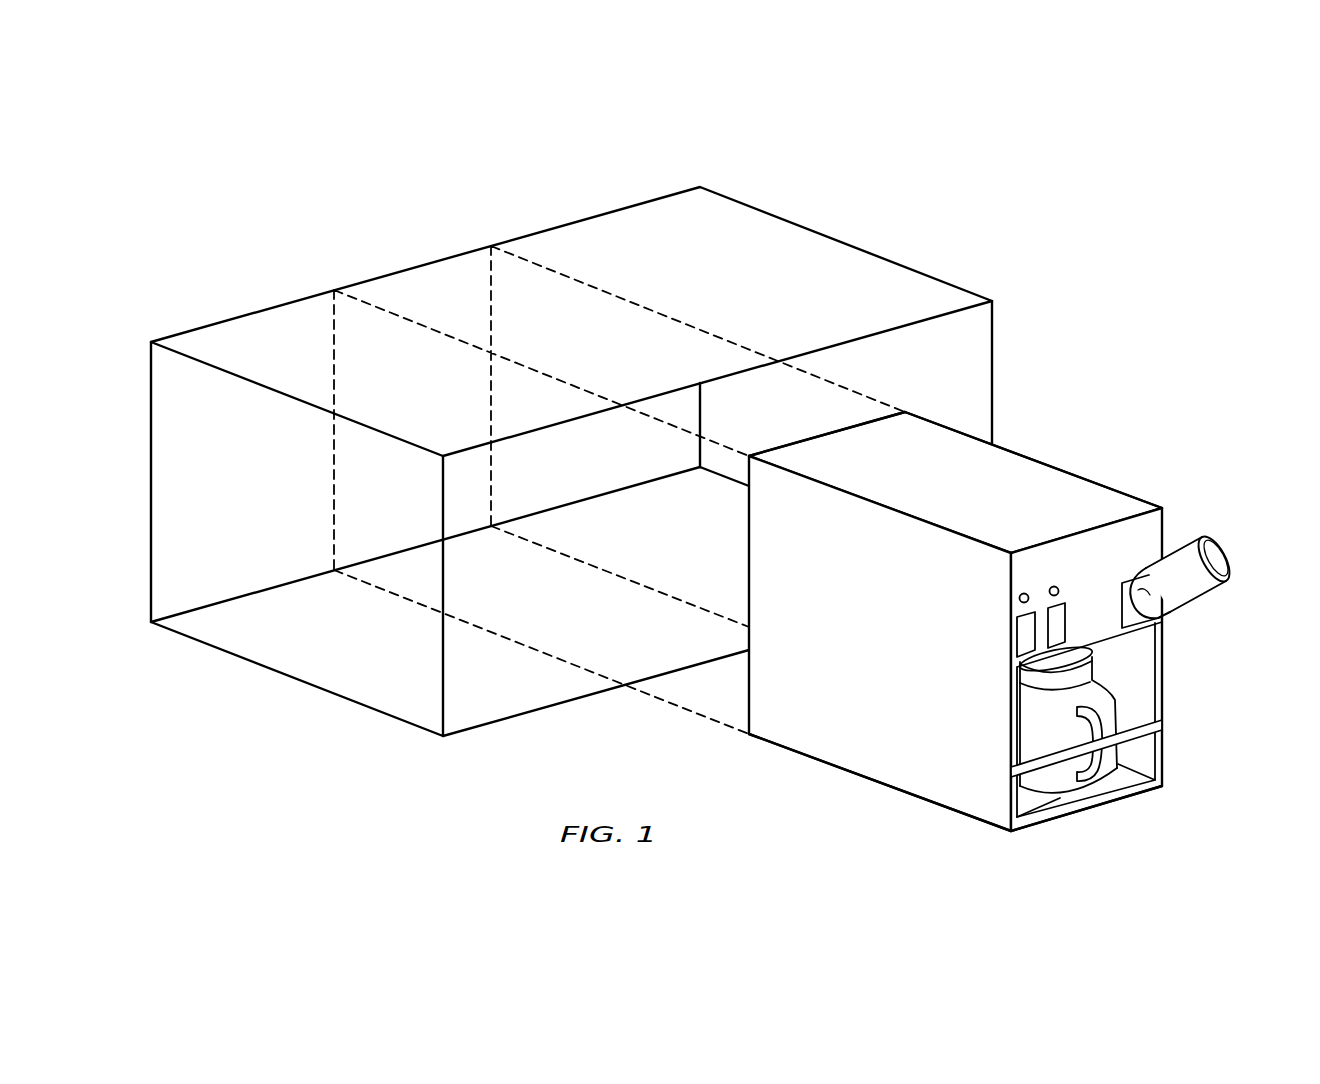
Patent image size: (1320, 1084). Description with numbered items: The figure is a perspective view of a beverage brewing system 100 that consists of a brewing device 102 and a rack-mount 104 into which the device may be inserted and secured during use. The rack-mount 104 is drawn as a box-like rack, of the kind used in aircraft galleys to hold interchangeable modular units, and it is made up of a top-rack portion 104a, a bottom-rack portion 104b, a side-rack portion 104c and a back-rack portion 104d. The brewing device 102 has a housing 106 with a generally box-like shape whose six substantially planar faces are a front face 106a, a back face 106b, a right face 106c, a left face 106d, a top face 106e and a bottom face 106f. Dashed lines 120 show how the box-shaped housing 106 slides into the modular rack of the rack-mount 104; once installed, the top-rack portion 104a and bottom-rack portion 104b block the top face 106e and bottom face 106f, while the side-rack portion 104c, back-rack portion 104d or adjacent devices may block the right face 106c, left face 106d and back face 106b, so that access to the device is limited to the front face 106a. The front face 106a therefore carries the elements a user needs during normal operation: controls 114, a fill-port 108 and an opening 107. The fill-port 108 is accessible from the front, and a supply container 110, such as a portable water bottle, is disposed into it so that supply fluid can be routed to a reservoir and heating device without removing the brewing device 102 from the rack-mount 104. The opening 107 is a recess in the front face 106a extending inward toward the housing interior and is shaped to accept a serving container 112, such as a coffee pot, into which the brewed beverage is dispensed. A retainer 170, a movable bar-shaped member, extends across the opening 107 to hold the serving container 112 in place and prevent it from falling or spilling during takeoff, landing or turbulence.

The beverage brewing system 100 is at (1015, 218).
The brewing device 102 is at (1112, 449).
The rack-mount 104 is at (746, 196).
The top-rack portion 104a is at (783, 281).
The bottom-rack portion 104b is at (389, 658).
The side-rack portion 104c is at (966, 358).
The back-rack portion 104d is at (266, 475).
The housing 106 is at (789, 769).
The front face 106a is at (1152, 556).
The back face 106b is at (798, 437).
The right face 106c is at (1032, 451).
The left face 106d is at (894, 651).
The top face 106e is at (977, 495).
The bottom face 106f is at (911, 797).
The opening 107 is at (1138, 688).
The fill-port 108 is at (1136, 631).
The supply container 110 is at (1215, 533).
The serving container 112 is at (1061, 725).
The controls 114 is at (1041, 580).
The dashed lines 120 is at (627, 297).
The retainer 170 is at (1161, 726).